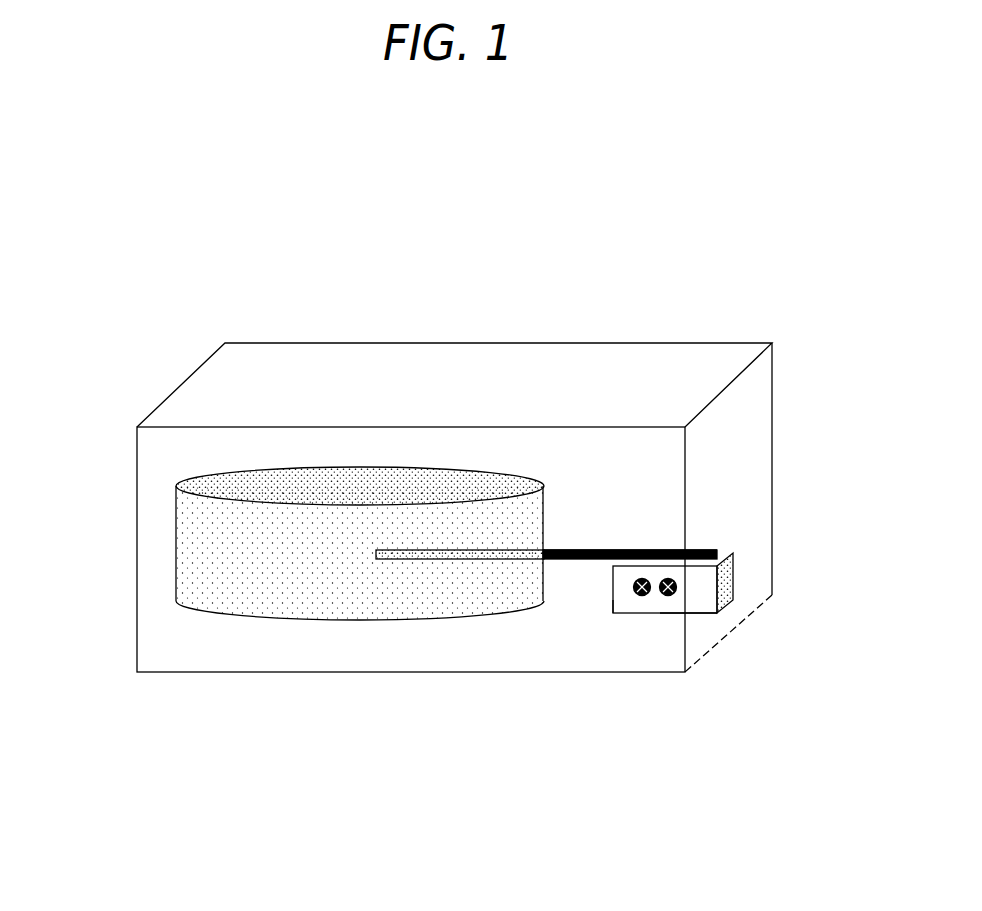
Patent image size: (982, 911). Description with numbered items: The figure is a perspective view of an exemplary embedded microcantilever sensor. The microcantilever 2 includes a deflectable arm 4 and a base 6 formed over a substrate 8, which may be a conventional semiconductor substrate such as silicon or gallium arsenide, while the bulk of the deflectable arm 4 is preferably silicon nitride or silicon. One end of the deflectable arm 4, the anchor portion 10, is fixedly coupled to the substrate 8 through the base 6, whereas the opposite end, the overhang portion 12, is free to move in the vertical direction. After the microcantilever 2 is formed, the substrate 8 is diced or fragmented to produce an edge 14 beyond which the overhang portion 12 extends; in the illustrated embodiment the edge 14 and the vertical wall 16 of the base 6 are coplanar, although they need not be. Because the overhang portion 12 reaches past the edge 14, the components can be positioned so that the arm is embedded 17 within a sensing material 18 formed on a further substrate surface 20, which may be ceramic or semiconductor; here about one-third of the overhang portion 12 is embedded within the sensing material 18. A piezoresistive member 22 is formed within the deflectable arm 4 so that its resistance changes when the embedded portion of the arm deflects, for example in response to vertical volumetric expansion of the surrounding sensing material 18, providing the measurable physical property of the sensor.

The microcantilever 2 is at (350, 378).
The deflectable arm 4 is at (648, 513).
The base 6 is at (723, 557).
The substrate 8 is at (670, 617).
The anchor portion 10 is at (688, 542).
The overhang portion 12 is at (567, 563).
The edge 14 is at (605, 572).
The vertical wall 16 is at (610, 602).
The embedded portion 17 is at (403, 555).
The sensing material 18 is at (218, 528).
The further substrate surface 20 is at (270, 625).
The piezoresistive member 22 is at (625, 567).